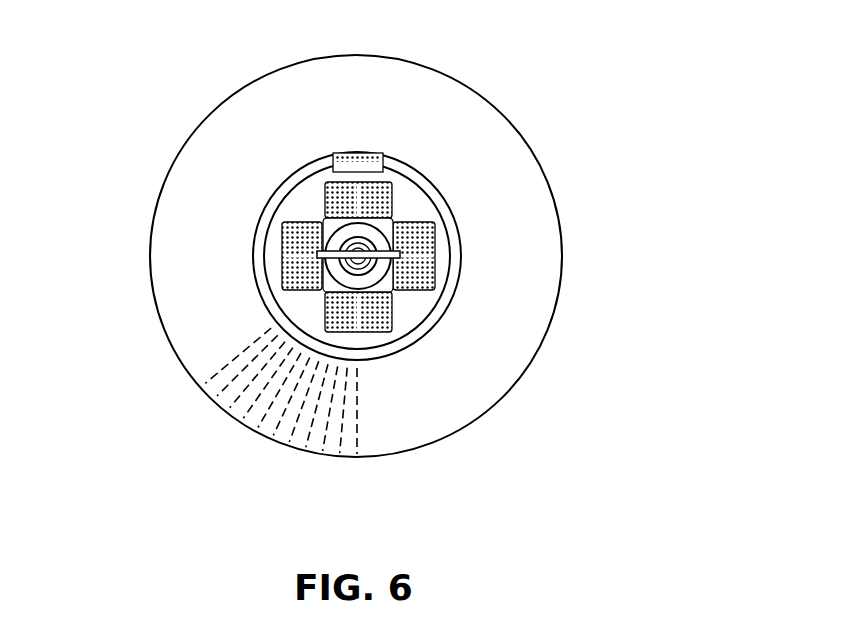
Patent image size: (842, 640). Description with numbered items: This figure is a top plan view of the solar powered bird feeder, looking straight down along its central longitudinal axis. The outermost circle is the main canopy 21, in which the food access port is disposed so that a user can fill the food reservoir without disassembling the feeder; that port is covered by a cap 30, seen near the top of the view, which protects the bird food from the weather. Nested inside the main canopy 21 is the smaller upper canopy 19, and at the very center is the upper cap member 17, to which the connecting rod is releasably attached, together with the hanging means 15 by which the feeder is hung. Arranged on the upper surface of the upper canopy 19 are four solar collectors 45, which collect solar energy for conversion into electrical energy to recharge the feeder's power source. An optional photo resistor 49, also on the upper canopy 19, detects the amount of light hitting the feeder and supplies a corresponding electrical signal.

The main canopy 21 is at (380, 88).
The cap 30 is at (384, 160).
The upper canopy 19 is at (412, 200).
The upper cap member 17 is at (336, 231).
The hanging means 15 is at (317, 253).
The solar collector 45 is at (419, 254).
The photo resistor 49 is at (307, 299).